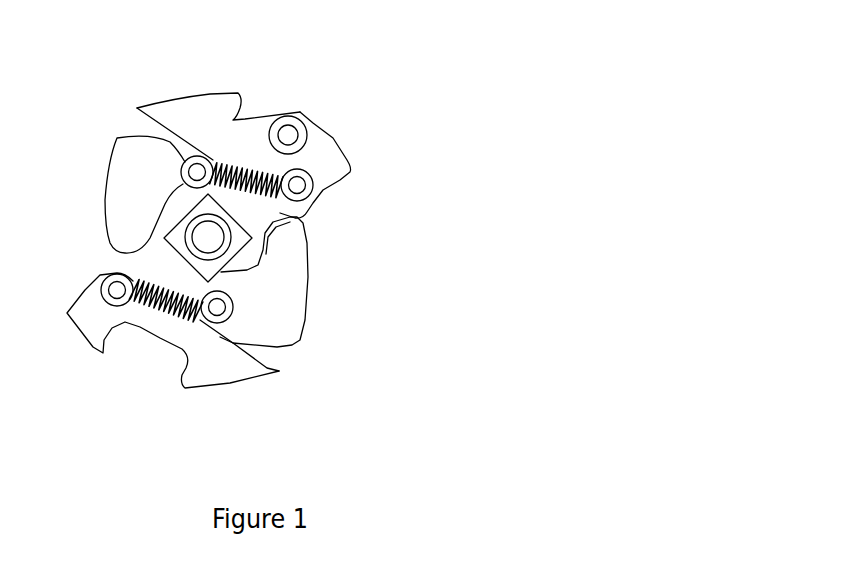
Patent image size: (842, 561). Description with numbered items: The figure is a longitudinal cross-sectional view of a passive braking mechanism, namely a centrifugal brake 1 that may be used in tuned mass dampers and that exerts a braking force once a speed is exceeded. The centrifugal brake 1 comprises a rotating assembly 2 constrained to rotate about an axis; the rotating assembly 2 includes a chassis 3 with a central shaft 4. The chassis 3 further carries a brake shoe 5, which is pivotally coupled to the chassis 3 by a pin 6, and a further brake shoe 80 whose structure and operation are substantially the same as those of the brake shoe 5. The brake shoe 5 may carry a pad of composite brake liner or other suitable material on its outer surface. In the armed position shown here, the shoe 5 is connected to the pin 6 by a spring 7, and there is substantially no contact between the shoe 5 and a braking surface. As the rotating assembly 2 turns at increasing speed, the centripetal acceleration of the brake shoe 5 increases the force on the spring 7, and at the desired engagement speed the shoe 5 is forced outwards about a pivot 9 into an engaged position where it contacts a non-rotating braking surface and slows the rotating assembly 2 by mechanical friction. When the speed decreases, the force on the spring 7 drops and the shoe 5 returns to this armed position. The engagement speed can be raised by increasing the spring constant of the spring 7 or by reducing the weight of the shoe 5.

The centrifugal brake 1 is at (386, 287).
The rotating assembly 2 is at (343, 138).
The chassis 3 is at (330, 178).
The central shaft 4 is at (211, 248).
The brake shoe 5 is at (117, 187).
The pin 6 is at (300, 193).
The spring 7 is at (192, 157).
The pivot 9 is at (185, 183).
The further brake shoe 80 is at (277, 338).